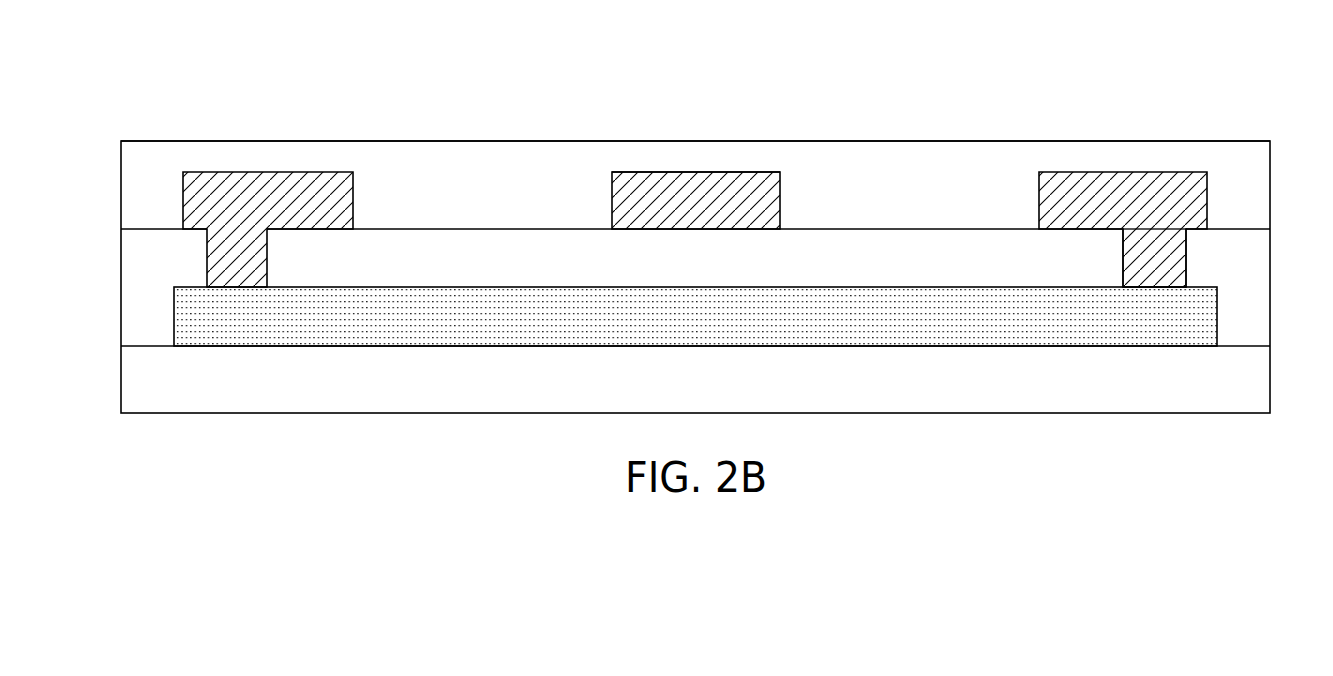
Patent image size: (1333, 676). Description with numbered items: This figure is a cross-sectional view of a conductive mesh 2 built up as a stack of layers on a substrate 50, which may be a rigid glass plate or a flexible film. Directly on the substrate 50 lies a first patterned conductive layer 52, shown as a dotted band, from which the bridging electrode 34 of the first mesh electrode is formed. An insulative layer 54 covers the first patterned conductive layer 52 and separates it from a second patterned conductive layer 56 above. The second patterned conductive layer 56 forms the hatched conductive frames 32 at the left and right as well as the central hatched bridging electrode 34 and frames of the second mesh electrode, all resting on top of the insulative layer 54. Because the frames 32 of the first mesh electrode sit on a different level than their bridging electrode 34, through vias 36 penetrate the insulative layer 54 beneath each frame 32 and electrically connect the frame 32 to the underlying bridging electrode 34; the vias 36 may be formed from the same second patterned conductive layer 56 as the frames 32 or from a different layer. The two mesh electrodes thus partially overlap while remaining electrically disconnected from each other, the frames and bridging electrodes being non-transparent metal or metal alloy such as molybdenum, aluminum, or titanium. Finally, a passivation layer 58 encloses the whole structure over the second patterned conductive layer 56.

The semiconductor structure 2 is at (1311, 53).
The conductive frame 32 is at (256, 213).
The bridging electrode 34 is at (685, 213).
The through via 36 is at (1168, 256).
The substrate 50 is at (685, 393).
The first patterned conductive layer 52 is at (187, 315).
The insulative layer 54 is at (1257, 287).
The second patterned conductive layer 56 is at (735, 183).
The passivation layer 58 is at (133, 184).